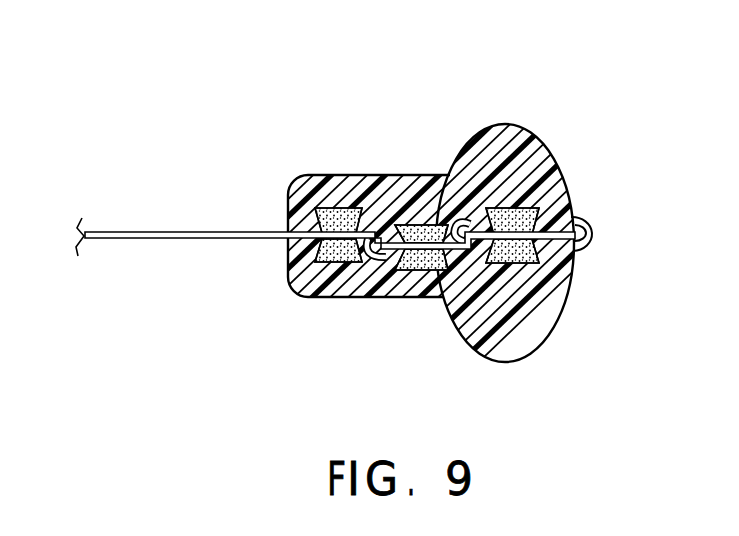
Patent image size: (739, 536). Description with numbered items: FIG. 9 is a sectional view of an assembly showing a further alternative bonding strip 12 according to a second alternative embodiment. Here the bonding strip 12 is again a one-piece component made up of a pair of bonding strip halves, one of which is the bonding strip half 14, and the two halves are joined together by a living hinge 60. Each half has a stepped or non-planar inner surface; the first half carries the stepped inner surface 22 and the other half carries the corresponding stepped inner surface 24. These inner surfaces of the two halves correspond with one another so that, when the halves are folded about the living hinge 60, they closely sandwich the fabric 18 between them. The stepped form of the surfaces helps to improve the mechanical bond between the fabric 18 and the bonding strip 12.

The bonding strip 12 is at (516, 101).
The bonding strip half 14 is at (557, 160).
The fabric 18 is at (172, 232).
The stepped inner surface 22 is at (380, 257).
The stepped inner surface 24 is at (467, 252).
The living hinge 60 is at (596, 229).